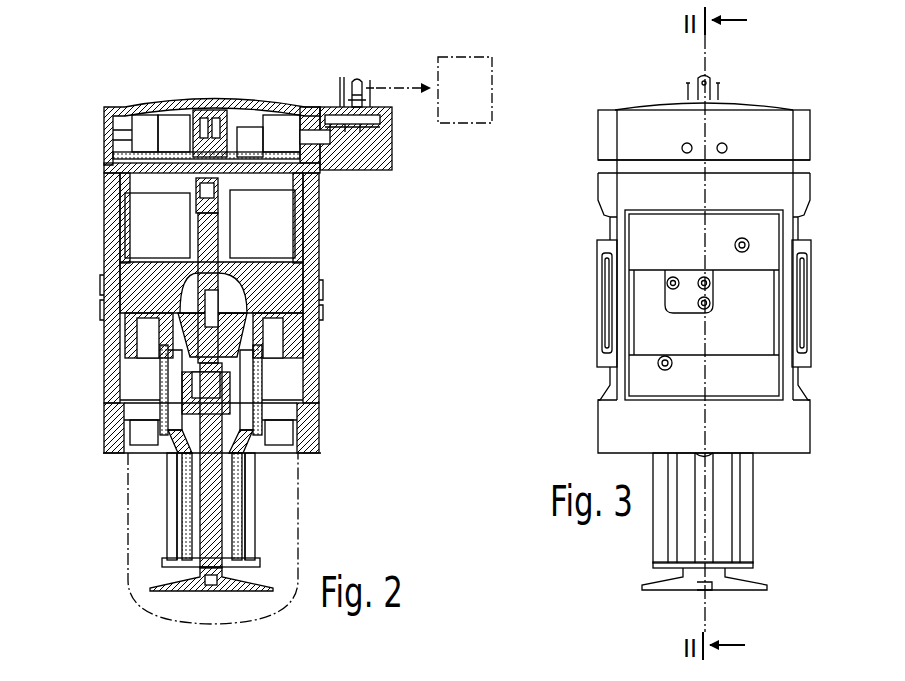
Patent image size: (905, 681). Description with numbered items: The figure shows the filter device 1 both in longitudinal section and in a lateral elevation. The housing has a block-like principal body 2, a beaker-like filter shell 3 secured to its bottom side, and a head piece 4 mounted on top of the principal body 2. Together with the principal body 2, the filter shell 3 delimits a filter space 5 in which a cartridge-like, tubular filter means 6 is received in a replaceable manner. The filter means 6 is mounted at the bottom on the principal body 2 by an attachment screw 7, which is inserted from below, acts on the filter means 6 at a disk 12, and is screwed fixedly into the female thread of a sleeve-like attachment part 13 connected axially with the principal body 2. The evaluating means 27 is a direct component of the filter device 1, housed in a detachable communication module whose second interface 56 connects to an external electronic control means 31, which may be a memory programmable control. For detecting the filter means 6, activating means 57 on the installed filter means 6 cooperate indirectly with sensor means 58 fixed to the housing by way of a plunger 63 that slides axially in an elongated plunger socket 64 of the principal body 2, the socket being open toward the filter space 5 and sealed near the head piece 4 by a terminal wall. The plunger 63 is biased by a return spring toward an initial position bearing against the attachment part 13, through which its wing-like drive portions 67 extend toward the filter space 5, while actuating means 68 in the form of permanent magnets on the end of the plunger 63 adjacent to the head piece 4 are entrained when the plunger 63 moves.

In FIG. 2, the filter device 1 is at (336, 288).
In FIG. 3, the filter device 1 is at (815, 220).
In FIG. 2, the principal body 2 is at (132, 263).
In FIG. 3, the principal body 2 is at (776, 300).
In FIG. 2, the filter shell 3 is at (128, 530).
In FIG. 2, the head piece 4 is at (114, 105).
In FIG. 3, the head piece 4 is at (772, 123).
In FIG. 2, the filter space 5 is at (282, 534).
In FIG. 2, the filter means 6 is at (236, 482).
In FIG. 3, the filter means 6 is at (725, 505).
In FIG. 2, the attachment screw 7 is at (210, 512).
In FIG. 2, the disk 12 is at (185, 578).
In FIG. 2, the attachment part 13 is at (265, 420).
In FIG. 2, the evaluating means 27 is at (370, 170).
In FIG. 2, the external electronic control means 31 is at (497, 90).
In FIG. 2, the second interface 56 is at (348, 72).
In FIG. 2, the activating means 57 is at (190, 452).
In FIG. 2, the sensor means 58 is at (220, 160).
In FIG. 2, the plunger 63 is at (200, 307).
In FIG. 2, the plunger socket 64 is at (200, 285).
In FIG. 2, the drive portions 67 is at (165, 415).
In FIG. 2, the actuating means 68 is at (205, 193).